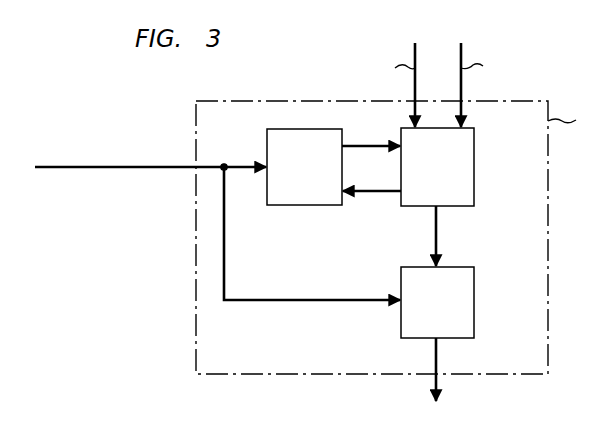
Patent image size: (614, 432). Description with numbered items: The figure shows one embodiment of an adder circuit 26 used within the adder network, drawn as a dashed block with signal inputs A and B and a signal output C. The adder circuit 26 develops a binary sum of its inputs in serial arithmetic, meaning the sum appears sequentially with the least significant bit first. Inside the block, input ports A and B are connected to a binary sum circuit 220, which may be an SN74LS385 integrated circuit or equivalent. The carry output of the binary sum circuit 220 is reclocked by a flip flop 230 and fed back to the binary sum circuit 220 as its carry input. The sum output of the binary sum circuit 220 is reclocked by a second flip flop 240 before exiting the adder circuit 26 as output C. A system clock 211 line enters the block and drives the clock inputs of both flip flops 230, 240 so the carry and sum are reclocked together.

The adder circuit 26 is at (531, 101).
The system clock line 211 is at (217, 223).
The flip flop 230 is at (267, 136).
The binary sum circuit 220 is at (474, 147).
The flip flop 240 is at (474, 284).